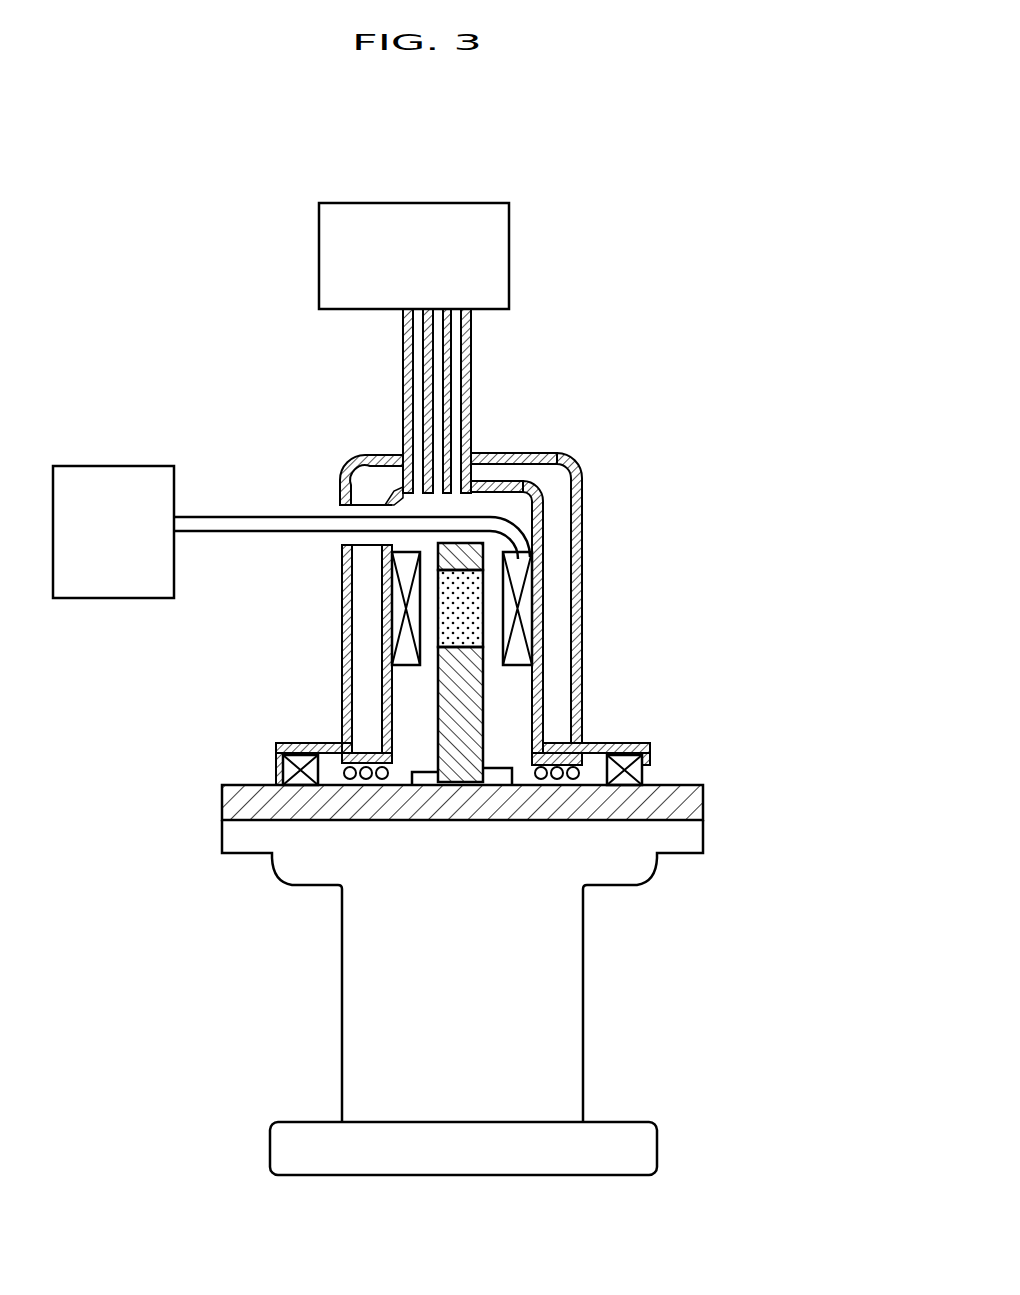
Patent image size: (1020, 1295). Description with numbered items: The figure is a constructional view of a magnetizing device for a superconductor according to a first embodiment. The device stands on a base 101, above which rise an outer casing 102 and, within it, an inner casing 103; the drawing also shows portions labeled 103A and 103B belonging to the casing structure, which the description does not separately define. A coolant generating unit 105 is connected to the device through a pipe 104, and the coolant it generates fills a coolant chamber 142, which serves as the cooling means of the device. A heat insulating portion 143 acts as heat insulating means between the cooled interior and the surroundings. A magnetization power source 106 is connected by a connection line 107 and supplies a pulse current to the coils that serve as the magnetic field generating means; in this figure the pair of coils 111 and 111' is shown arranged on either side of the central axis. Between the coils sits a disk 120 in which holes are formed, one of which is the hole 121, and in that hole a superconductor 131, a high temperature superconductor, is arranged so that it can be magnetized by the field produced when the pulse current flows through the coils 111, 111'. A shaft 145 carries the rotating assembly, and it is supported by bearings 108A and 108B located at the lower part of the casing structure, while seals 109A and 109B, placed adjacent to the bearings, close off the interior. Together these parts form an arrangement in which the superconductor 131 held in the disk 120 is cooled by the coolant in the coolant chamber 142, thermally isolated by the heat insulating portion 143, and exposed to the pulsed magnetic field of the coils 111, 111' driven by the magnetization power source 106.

The base 101 is at (657, 1143).
The outer casing 102 is at (582, 492).
The inner casing 103 is at (552, 472).
The inner yoke 103A is at (345, 655).
The outer yoke 103B is at (543, 655).
The pipe 104 is at (473, 358).
The coolant generating unit 105 is at (480, 203).
The magnetization power source 106 is at (152, 465).
The connection line 107 is at (242, 517).
The bearing 108A is at (642, 770).
The bearing 108B is at (283, 770).
The seal 109A is at (557, 768).
The seal 109B is at (370, 765).
The coil 111 is at (569, 608).
The coil 111' is at (346, 608).
The disk 120 is at (437, 720).
The hole 121 is at (432, 575).
The superconductor 131 is at (490, 580).
The coolant chamber 142 is at (507, 725).
The heat insulating portion 143 is at (493, 473).
The shaft 145 is at (703, 800).